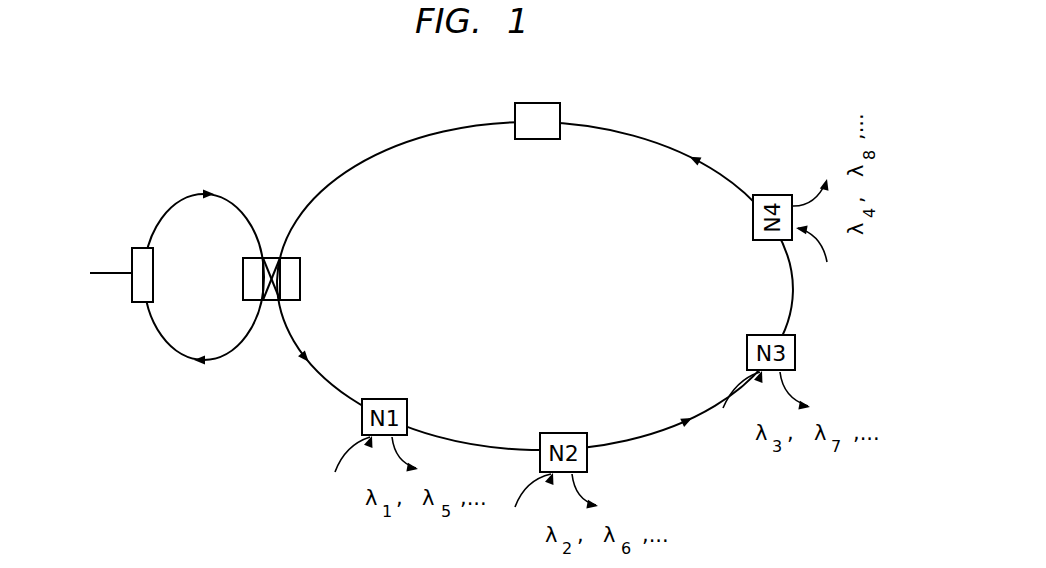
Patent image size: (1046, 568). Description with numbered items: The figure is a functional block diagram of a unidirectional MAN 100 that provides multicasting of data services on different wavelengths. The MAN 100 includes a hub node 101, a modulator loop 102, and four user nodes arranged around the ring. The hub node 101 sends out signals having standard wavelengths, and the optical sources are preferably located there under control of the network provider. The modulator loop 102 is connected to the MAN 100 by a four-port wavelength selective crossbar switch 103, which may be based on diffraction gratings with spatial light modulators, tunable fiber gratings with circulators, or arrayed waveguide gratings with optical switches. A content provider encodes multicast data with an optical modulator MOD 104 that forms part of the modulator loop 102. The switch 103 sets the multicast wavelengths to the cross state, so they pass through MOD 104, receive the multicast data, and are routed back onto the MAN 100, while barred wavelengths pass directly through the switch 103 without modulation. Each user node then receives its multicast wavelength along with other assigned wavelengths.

The unidirectional MAN 100 is at (320, 146).
The hub node 101 is at (551, 103).
The modulator loop 102 is at (150, 360).
The four-port wavelength selective crossbar switch 103 is at (300, 283).
The optical modulator MOD 104 is at (132, 256).